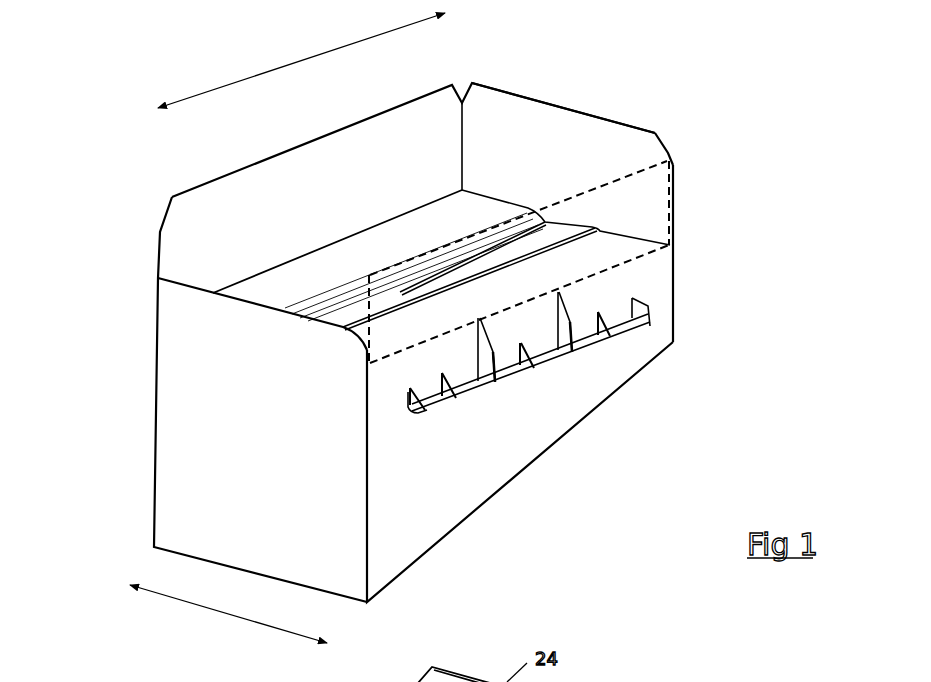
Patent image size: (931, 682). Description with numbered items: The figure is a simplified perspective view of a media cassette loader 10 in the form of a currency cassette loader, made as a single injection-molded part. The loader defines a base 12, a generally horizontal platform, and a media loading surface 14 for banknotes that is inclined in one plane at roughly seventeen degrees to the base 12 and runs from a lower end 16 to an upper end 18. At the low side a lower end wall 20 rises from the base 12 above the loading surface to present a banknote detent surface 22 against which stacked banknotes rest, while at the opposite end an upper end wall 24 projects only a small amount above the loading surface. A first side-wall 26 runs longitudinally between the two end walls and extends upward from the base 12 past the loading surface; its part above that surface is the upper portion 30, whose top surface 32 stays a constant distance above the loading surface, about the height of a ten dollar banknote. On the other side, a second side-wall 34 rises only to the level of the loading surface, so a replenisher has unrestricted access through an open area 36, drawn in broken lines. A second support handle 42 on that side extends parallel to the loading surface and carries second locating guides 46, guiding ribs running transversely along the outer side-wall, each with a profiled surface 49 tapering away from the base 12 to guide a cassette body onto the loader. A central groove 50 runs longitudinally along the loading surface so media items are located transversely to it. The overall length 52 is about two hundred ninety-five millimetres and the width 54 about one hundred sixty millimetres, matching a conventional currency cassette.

The media cassette loader 10 is at (128, 618).
The base 12 is at (578, 452).
The media loading surface 14 is at (635, 248).
The lower end 16 is at (690, 252).
The upper end 18 is at (382, 377).
The lower end wall 20 is at (675, 200).
The banknote detent surface 22 is at (580, 127).
The upper end wall 24 is at (170, 383).
The first side-wall 26 is at (140, 255).
The upper portion 30 is at (353, 170).
The top surface 32 is at (237, 173).
The second side-wall 34 is at (413, 552).
The open area 36 is at (623, 178).
The second support handle 42 is at (517, 382).
The second locating guides 46 is at (562, 333).
The profiled surface 49 is at (570, 322).
The central groove 50 is at (347, 308).
The length 52 is at (275, 68).
The width 54 is at (213, 610).